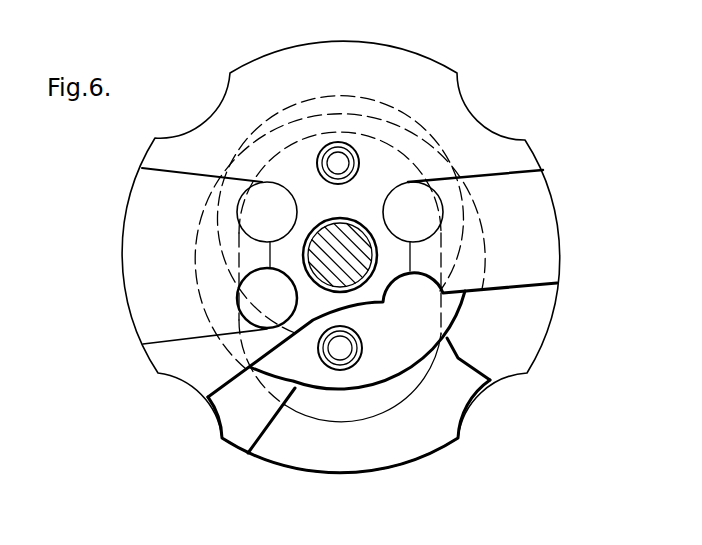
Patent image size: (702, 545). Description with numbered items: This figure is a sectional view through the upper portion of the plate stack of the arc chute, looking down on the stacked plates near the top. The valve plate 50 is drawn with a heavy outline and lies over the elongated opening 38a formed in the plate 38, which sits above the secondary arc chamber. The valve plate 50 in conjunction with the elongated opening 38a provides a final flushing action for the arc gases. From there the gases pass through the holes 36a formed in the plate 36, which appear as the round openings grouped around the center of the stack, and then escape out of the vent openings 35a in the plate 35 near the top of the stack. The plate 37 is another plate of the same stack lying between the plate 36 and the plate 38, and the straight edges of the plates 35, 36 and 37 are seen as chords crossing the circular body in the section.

The plate 35 is at (433, 59).
The vent openings 35a is at (169, 171).
The plate 36 is at (560, 255).
The holes 36a is at (393, 210).
The plate 37 is at (545, 335).
The plate 38 is at (399, 471).
The elongated opening 38a is at (381, 414).
The valve plate 50 is at (417, 358).